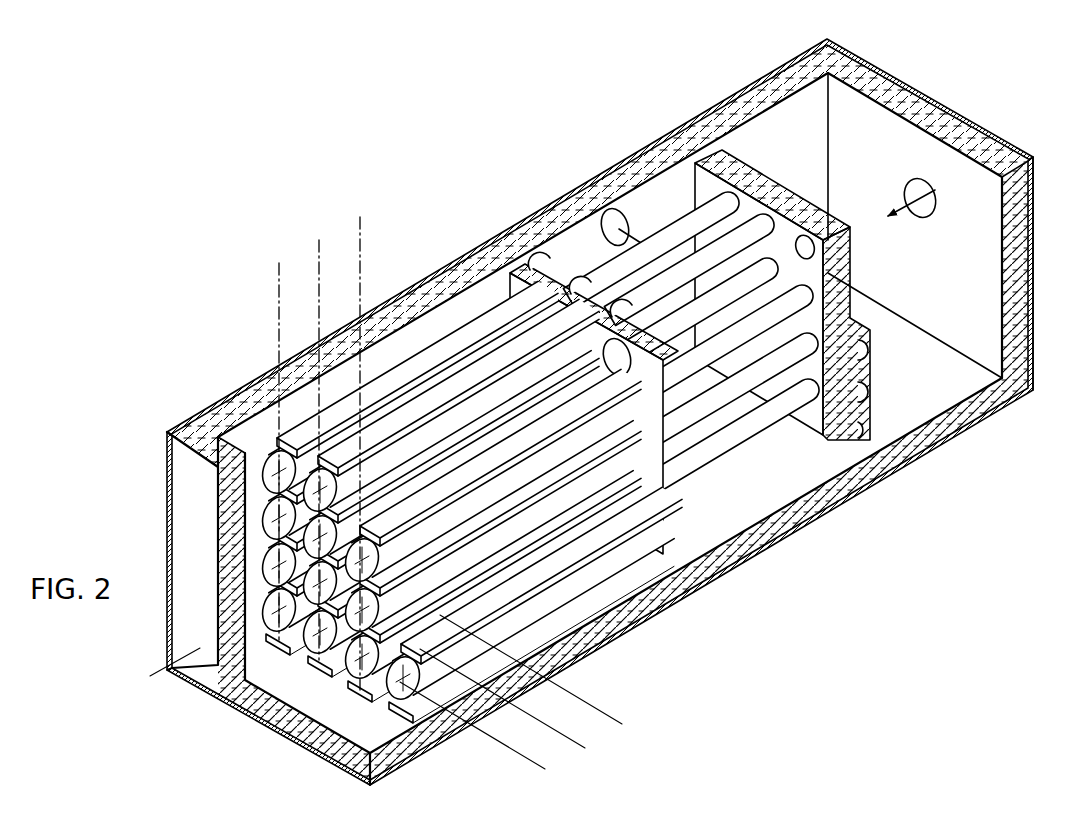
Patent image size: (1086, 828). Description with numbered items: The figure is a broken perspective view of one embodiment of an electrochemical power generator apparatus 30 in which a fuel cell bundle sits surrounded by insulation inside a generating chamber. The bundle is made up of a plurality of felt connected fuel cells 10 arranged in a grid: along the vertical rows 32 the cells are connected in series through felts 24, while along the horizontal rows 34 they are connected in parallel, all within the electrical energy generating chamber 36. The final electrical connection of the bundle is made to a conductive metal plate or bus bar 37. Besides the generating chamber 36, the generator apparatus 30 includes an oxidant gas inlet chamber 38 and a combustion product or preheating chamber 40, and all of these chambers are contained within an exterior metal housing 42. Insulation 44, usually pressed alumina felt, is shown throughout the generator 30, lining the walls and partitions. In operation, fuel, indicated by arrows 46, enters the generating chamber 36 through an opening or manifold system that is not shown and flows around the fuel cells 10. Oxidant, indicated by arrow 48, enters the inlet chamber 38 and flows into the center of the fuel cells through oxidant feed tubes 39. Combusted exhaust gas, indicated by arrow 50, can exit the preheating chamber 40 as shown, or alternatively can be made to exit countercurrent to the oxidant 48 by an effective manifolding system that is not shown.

The fuel cells 10 is at (468, 499).
The felts 24 is at (314, 426).
The electrochemical power generator apparatus 30 is at (595, 412).
The vertical rows 32 is at (372, 247).
The horizontal rows 34 is at (610, 716).
The electrical energy generating chamber 36 is at (400, 366).
The conductive metal plate or bus bar 37 is at (292, 645).
The oxidant gas inlet chamber 38 is at (816, 144).
The oxidant feed tubes 39 is at (765, 270).
The combustion product or preheating chamber 40 is at (690, 200).
The exterior metal housing 42 is at (1033, 306).
The insulation 44 is at (737, 176).
The fuel 46 is at (150, 676).
The oxidant 48 is at (1013, 150).
The combusted exhaust gas 50 is at (526, 175).